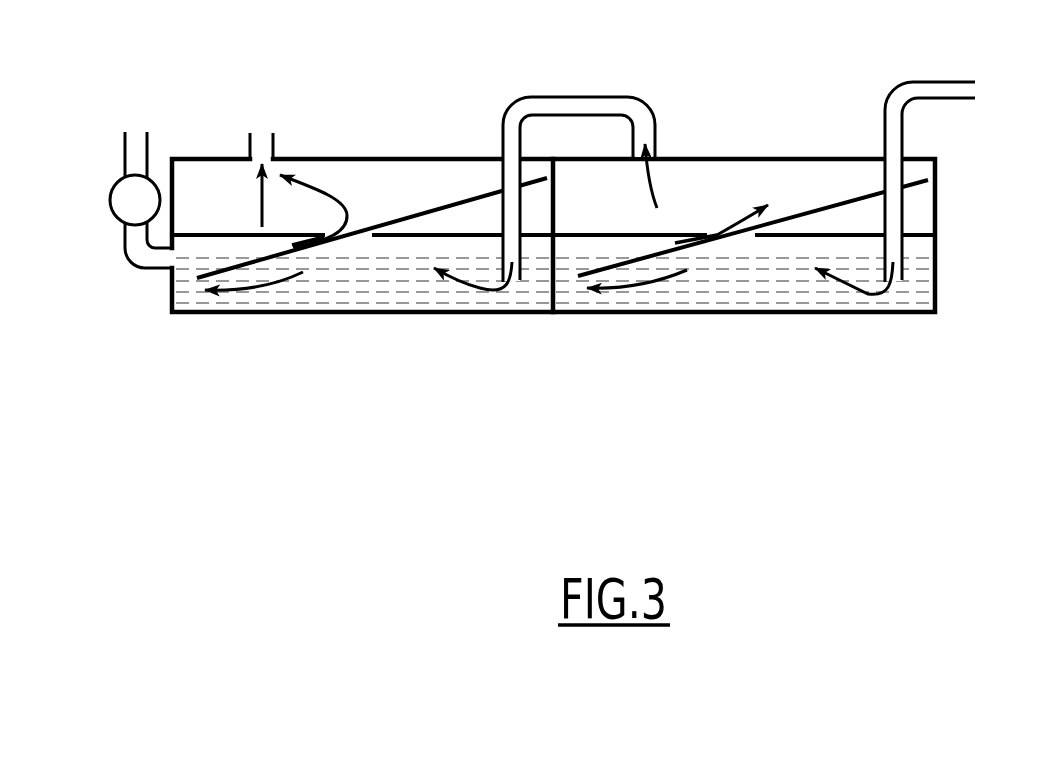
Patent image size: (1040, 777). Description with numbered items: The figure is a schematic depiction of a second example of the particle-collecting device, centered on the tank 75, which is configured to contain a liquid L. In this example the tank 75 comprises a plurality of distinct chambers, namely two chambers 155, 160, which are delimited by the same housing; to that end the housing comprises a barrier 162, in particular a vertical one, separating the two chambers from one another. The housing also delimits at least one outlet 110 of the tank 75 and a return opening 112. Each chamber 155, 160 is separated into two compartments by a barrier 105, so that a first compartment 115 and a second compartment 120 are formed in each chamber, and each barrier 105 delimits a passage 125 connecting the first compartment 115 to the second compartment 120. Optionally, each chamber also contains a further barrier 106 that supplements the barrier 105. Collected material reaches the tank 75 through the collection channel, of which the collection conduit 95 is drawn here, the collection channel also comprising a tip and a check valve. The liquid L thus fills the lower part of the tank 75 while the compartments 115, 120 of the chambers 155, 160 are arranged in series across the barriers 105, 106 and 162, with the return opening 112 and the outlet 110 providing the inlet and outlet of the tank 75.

The tank 75 is at (468, 429).
The collection conduit 95 is at (885, 142).
The barrier 105 is at (397, 223).
The barrier 106 is at (302, 233).
The outlet 110 is at (262, 227).
The return opening 112 is at (172, 262).
The first compartment 115 is at (912, 207).
The second compartment 120 is at (455, 181).
The passage 125 is at (181, 290).
The chamber 155 is at (675, 187).
The chamber 160 is at (412, 187).
The barrier 162 is at (553, 192).
The liquid L is at (353, 290).